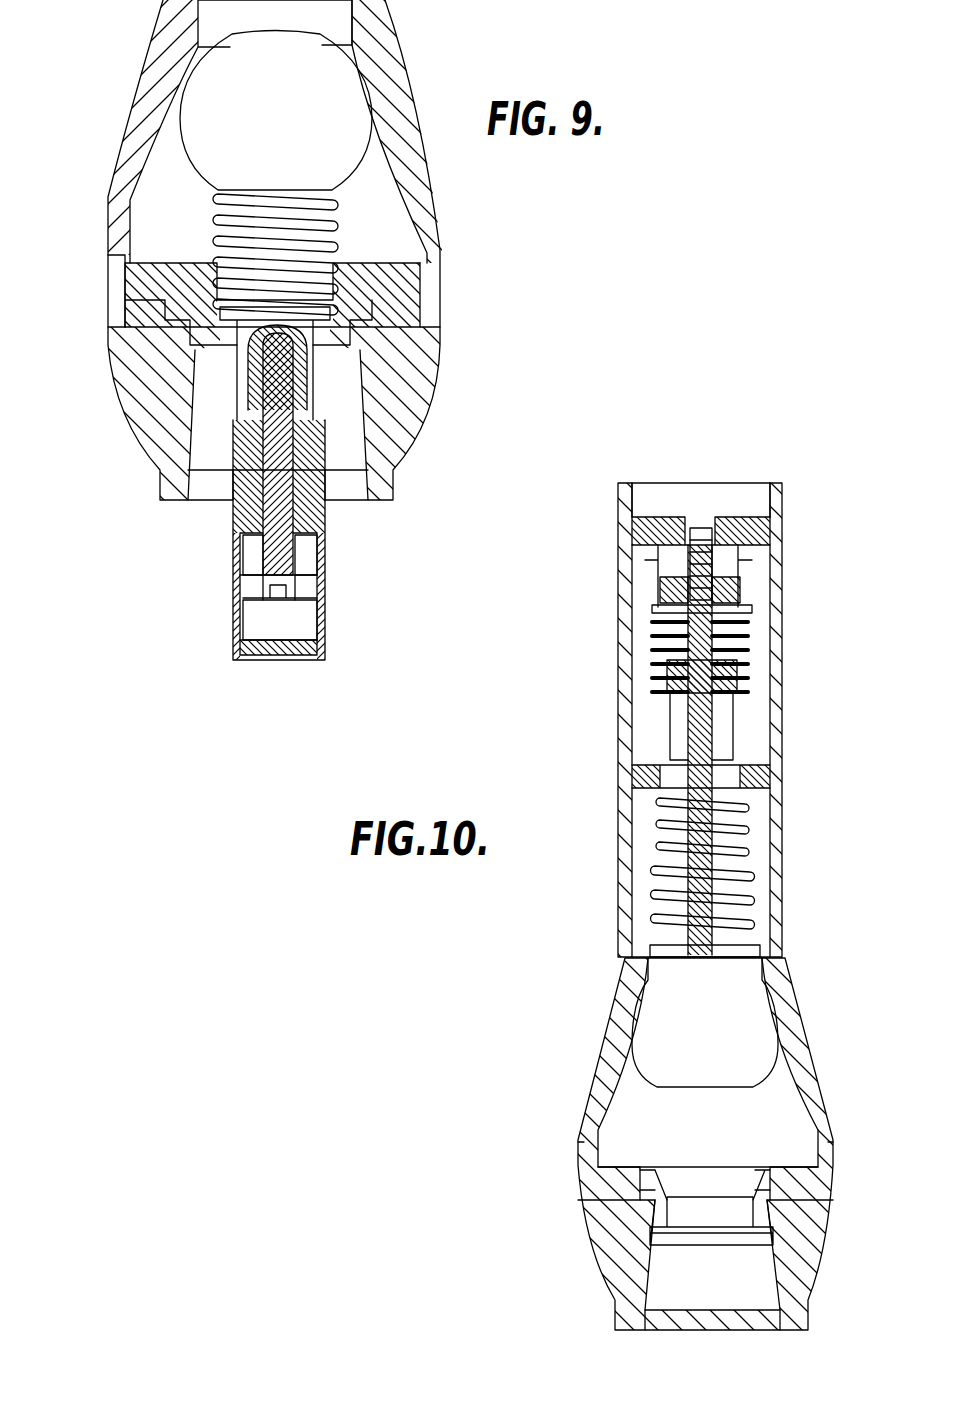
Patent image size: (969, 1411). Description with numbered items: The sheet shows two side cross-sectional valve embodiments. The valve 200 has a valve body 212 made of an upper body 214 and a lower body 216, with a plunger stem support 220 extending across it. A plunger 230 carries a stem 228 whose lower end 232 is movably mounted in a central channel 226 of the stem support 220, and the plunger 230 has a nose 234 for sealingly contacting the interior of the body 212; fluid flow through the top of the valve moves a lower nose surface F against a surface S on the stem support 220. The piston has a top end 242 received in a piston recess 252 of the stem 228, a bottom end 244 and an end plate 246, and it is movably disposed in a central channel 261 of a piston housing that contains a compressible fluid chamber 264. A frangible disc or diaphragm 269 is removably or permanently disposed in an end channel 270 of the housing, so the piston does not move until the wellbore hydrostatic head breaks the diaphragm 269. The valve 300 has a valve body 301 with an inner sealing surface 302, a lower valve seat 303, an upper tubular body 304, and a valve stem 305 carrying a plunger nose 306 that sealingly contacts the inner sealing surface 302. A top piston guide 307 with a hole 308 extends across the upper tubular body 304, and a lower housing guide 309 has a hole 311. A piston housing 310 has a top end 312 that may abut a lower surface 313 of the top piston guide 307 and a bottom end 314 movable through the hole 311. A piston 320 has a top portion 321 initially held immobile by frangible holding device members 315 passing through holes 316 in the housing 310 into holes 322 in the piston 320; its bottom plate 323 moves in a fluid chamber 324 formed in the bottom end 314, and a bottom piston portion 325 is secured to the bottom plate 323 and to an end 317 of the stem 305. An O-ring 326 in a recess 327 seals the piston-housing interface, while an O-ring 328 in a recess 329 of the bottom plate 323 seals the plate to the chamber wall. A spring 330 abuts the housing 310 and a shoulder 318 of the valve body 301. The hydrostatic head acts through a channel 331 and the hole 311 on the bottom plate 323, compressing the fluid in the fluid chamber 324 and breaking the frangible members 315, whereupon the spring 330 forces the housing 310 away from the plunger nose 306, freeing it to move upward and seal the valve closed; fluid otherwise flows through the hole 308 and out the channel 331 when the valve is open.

In FIG. 9, the valve 200 is at (122, 137).
In FIG. 9, the valve body 212 is at (116, 356).
In FIG. 9, the upper body 214 is at (388, 60).
In FIG. 9, the lower body 216 is at (425, 366).
In FIG. 9, the plunger stem support 220 is at (126, 283).
In FIG. 9, the central channel 226 is at (325, 332).
In FIG. 9, the stem 228 is at (350, 292).
In FIG. 9, the plunger 230 is at (220, 199).
In FIG. 9, the lower end 232 is at (272, 412).
In FIG. 9, the nose 234 is at (205, 75).
In FIG. 9, the top end 242 is at (195, 356).
In FIG. 9, the bottom end 244 is at (262, 554).
In FIG. 9, the end plate 246 is at (250, 572).
In FIG. 9, the piston recess 252 is at (295, 398).
In FIG. 9, the central channel 261 is at (269, 478).
In FIG. 9, the compressible fluid chamber 264 is at (306, 560).
In FIG. 9, the frangible disc or diaphragm 269 is at (282, 662).
In FIG. 9, the end channel 270 is at (247, 622).
In FIG. 9, the lower nose surface F is at (345, 178).
In FIG. 10, the lower nose surface F is at (760, 1085).
In FIG. 9, the surface S is at (345, 268).
In FIG. 10, the surface S is at (697, 1273).
In FIG. 10, the valve 300 is at (620, 923).
In FIG. 10, the valve body 301 is at (790, 986).
In FIG. 10, the inner sealing surface 302 is at (636, 1010).
In FIG. 10, the lower valve seat 303 is at (748, 1172).
In FIG. 10, the upper tubular body 304 is at (774, 575).
In FIG. 10, the valve stem 305 is at (775, 892).
In FIG. 10, the plunger nose 306 is at (665, 1060).
In FIG. 10, the top piston guide 307 is at (638, 500).
In FIG. 10, the hole 308 is at (708, 500).
In FIG. 10, the lower housing guide 309 is at (660, 786).
In FIG. 10, the piston housing 310 is at (672, 677).
In FIG. 10, the hole 311 is at (662, 800).
In FIG. 10, the top end 312 is at (660, 580).
In FIG. 10, the lower surface 313 is at (770, 550).
In FIG. 10, the bottom end 314 is at (775, 776).
In FIG. 10, the frangible holding device members 315 is at (655, 662).
In FIG. 10, the holes 316 is at (766, 662).
In FIG. 10, the end 317 is at (676, 852).
In FIG. 10, the shoulder 318 is at (782, 962).
In FIG. 10, the piston 320 is at (660, 630).
In FIG. 10, the top portion 321 is at (628, 540).
In FIG. 10, the holes 322 is at (700, 500).
In FIG. 10, the bottom plate 323 is at (670, 716).
In FIG. 10, the fluid chamber 324 is at (670, 760).
In FIG. 10, the bottom piston portion 325 is at (760, 746).
In FIG. 10, the O-ring 326 is at (770, 684).
In FIG. 10, the recess 327 is at (680, 700).
In FIG. 10, the O-ring 328 is at (770, 714).
In FIG. 10, the recess 329 is at (672, 732).
In FIG. 10, the spring 330 is at (742, 872).
In FIG. 10, the channel 331 is at (657, 1276).